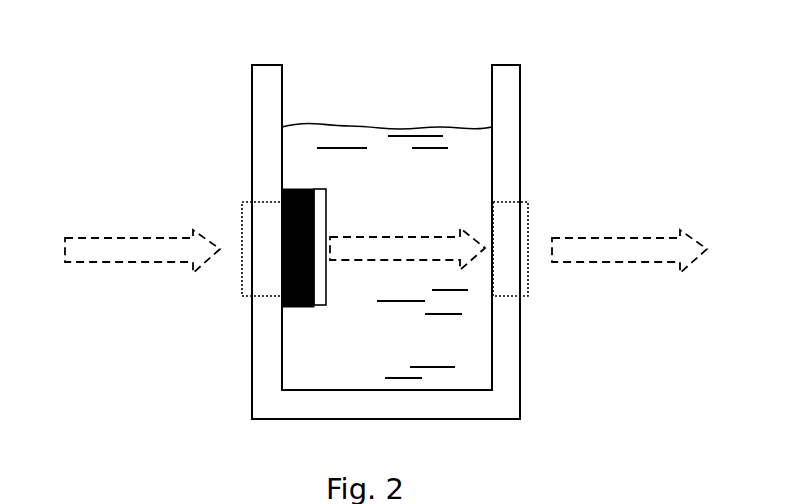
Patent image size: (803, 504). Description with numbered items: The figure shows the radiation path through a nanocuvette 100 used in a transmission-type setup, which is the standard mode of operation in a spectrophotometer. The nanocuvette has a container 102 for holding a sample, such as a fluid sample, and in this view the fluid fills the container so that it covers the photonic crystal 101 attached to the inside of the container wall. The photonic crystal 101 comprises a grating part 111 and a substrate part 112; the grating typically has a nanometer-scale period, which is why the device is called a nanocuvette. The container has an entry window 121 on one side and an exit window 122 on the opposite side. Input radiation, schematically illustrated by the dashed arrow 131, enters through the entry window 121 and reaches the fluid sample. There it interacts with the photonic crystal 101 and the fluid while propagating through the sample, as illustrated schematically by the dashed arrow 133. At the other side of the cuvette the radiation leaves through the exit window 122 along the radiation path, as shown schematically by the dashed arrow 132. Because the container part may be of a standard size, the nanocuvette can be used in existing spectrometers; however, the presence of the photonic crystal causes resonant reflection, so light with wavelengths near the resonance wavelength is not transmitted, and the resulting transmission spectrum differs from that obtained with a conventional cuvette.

The nanocuvette 100 is at (105, 47).
The photonic crystal 101 is at (354, 264).
The container 102 is at (508, 350).
The grating part 111 is at (317, 292).
The substrate part 112 is at (298, 308).
The entry window 121 is at (243, 213).
The exit window 122 is at (528, 213).
The input radiation 131 is at (142, 251).
The exiting radiation 132 is at (629, 251).
The radiation propagating through fluid sample 133 is at (407, 249).